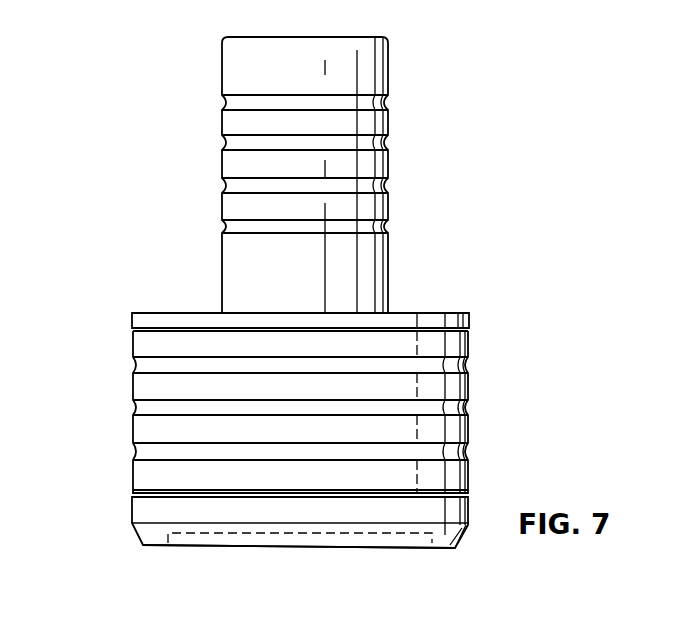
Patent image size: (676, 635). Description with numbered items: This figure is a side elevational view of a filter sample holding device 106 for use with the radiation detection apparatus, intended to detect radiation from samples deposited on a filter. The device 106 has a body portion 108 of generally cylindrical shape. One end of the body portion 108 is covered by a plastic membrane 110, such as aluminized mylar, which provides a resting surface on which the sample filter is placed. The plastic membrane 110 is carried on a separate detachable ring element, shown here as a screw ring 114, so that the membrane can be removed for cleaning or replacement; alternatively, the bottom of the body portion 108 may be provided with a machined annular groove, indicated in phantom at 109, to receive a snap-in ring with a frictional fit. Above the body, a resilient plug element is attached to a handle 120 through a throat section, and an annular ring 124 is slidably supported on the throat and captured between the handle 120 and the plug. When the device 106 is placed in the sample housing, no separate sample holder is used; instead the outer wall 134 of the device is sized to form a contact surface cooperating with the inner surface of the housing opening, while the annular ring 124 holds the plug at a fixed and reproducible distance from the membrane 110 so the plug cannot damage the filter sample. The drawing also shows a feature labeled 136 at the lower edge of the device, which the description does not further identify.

The sample holding device 106 is at (437, 226).
The handle 120 is at (390, 130).
The annular ring 124 is at (420, 326).
The body portion 108 is at (472, 390).
The outer wall 134 is at (470, 481).
The screw ring 114 is at (145, 510).
The annular groove 109 is at (190, 533).
The plastic membrane 110 is at (375, 549).
The chamfer 136 is at (462, 536).